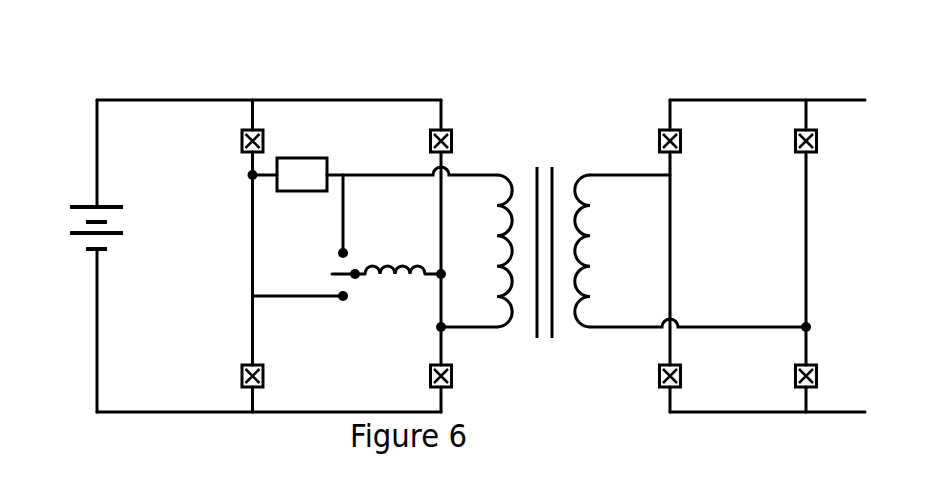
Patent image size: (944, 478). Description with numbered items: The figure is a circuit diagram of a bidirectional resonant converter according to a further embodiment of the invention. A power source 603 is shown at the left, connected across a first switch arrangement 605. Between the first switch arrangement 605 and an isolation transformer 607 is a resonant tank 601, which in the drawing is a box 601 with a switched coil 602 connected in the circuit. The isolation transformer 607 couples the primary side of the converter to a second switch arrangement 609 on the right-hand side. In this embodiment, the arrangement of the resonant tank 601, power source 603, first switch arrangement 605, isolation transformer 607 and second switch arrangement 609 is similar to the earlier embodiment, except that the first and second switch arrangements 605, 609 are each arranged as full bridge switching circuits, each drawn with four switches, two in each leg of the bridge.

The resonant tank 601 is at (302, 174).
The inductor 602 is at (382, 316).
The power source 603 is at (76, 228).
The first switch arrangement 605 is at (267, 90).
The isolation transformer 607 is at (543, 239).
The second switch arrangement 609 is at (823, 95).